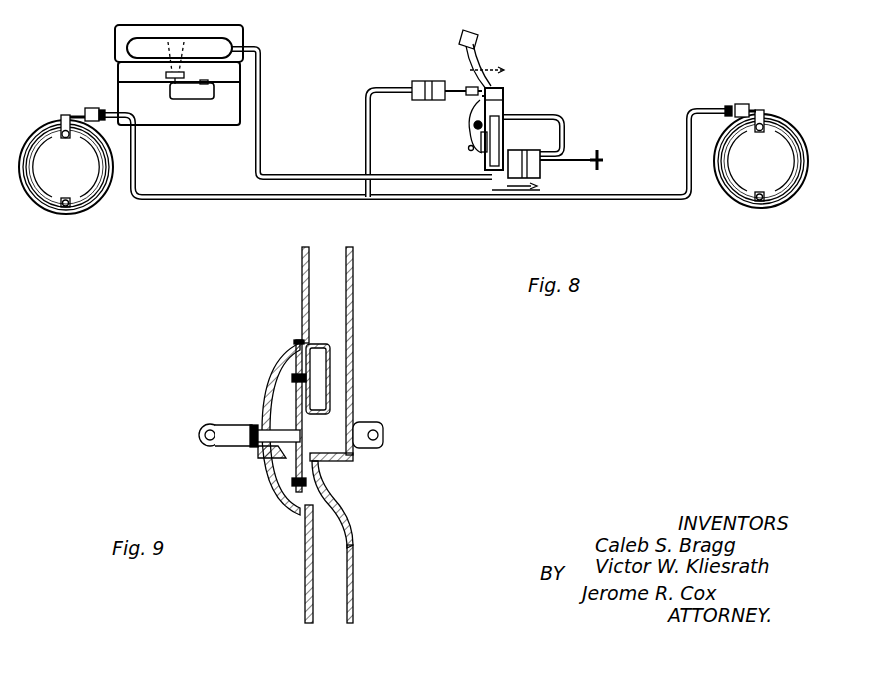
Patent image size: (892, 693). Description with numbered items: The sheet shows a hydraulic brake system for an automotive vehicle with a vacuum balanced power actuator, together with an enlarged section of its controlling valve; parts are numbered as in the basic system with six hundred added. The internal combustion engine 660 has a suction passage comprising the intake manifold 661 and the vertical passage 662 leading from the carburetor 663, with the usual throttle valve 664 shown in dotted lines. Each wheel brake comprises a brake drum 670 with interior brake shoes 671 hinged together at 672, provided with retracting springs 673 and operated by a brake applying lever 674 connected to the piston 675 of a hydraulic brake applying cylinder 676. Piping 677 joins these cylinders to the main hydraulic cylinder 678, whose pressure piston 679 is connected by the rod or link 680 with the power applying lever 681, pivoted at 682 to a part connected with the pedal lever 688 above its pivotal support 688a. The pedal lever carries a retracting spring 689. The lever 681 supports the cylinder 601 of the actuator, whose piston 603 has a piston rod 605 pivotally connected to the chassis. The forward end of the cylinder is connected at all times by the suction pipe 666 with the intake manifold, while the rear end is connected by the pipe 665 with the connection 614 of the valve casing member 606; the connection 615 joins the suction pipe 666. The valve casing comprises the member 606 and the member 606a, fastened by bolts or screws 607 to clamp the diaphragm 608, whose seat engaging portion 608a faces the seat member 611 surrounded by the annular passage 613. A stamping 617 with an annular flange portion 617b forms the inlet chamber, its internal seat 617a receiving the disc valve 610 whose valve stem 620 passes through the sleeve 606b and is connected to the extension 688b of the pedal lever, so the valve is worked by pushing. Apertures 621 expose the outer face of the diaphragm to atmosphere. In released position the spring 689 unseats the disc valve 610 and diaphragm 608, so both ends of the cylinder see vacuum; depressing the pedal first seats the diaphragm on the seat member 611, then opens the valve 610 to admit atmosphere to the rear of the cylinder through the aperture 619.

In FIG. 8, the internal combustion engine 660 is at (238, 33).
In FIG. 8, the intake manifold 661 is at (250, 59).
In FIG. 8, the vertical passage 662 is at (170, 72).
In FIG. 8, the carburetor 663 is at (215, 93).
In FIG. 8, the throttle valve 664 is at (148, 27).
In FIG. 8, the pipe 665 is at (558, 118).
In FIG. 8, the suction pipe 666 is at (437, 178).
In FIG. 8, the brake drum 670 is at (99, 195).
In FIG. 8, the brake shoes 671 is at (76, 206).
In FIG. 8, the hinge 672 is at (60, 210).
In FIG. 8, the retracting springs 673 is at (65, 199).
In FIG. 8, the brake applying lever 674 is at (62, 118).
In FIG. 8, the pistons 675 is at (92, 108).
In FIG. 8, the hydraulic brake applying cylinders 676 is at (101, 108).
In FIG. 8, the piping 677 is at (208, 197).
In FIG. 8, the main hydraulic cylinder 678 is at (415, 84).
In FIG. 8, the pressure piston 679 is at (436, 82).
In FIG. 8, the rod or link 680 is at (480, 94).
In FIG. 8, the power applying lever 681 is at (499, 129).
In FIG. 8, the pivot 682 is at (503, 112).
In FIG. 8, the pedal lever 688 is at (469, 34).
In FIG. 8, the pivotal support 688a is at (476, 124).
In FIG. 8, the extension 688b is at (468, 136).
In FIG. 8, the retracting spring 689 is at (484, 70).
In FIG. 8, the cylinder 601 is at (512, 179).
In FIG. 8, the piston 603 is at (540, 179).
In FIG. 8, the piston rod 605 is at (584, 161).
In FIG. 9, the valve casing member 606 is at (352, 386).
In FIG. 9, the casing member 606a is at (302, 365).
In FIG. 9, the sleeve 606b is at (250, 432).
In FIG. 9, the bolts or screws 607 is at (298, 339).
In FIG. 9, the diaphragm 608 is at (331, 506).
In FIG. 9, the seat engaging portion 608a is at (350, 450).
In FIG. 9, the disc valve 610 is at (262, 448).
In FIG. 9, the seat member 611 is at (318, 470).
In FIG. 9, the annular passage 613 is at (320, 358).
In FIG. 9, the connection 614 is at (332, 283).
In FIG. 9, the connection 615 is at (333, 565).
In FIG. 9, the stamping 617 is at (296, 425).
In FIG. 9, the internal seat 617a is at (292, 482).
In FIG. 9, the annular flange portion 617b is at (292, 378).
In FIG. 9, the aperture 619 is at (304, 434).
In FIG. 9, the valve stem 620 is at (208, 444).
In FIG. 9, the apertures 621 is at (266, 393).